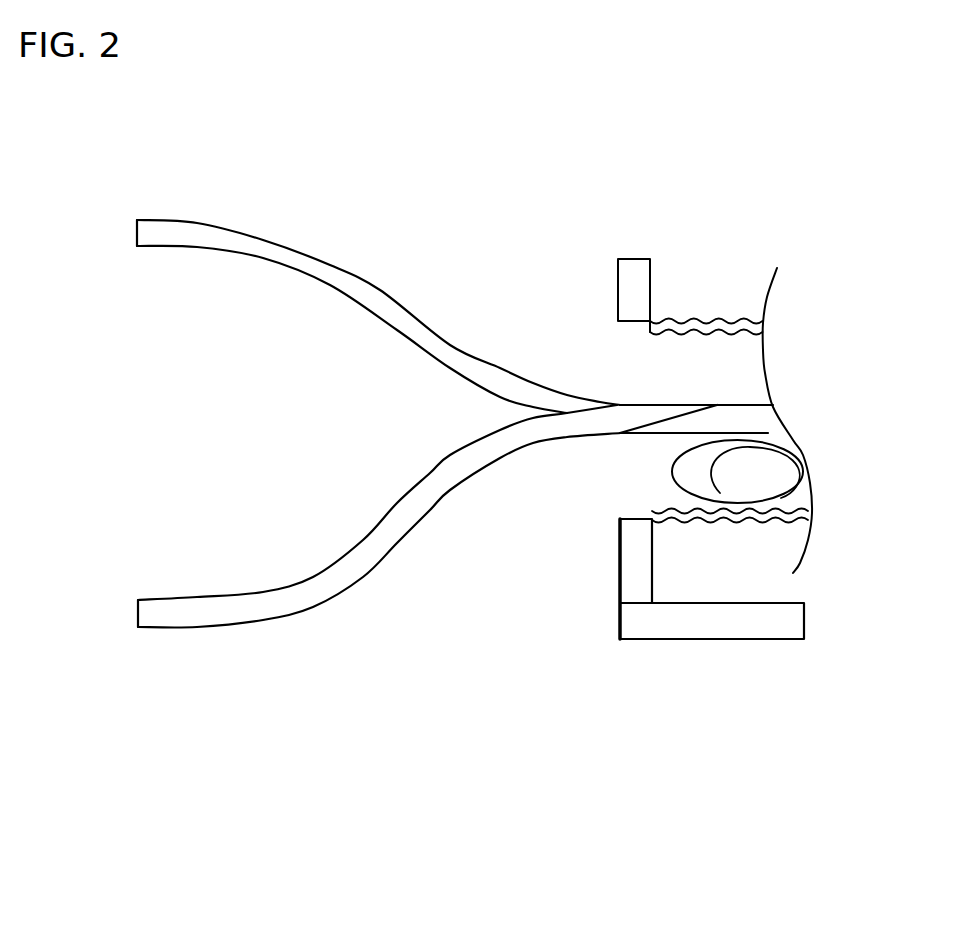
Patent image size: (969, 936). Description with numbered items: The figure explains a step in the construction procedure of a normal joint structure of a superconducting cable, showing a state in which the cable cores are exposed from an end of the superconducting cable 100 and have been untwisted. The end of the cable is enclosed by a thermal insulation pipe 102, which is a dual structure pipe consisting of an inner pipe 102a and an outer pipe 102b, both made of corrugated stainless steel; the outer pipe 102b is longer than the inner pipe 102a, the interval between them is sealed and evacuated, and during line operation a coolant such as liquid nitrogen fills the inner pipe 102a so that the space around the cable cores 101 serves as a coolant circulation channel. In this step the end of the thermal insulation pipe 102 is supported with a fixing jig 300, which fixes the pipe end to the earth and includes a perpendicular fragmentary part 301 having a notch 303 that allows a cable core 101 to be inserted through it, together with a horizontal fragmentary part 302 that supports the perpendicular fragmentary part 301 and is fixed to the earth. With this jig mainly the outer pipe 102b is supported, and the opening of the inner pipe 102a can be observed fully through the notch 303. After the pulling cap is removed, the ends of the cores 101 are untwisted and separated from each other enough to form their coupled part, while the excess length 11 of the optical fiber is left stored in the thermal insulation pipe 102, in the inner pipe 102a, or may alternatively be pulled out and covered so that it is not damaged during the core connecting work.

The superconducting cable 100 is at (474, 404).
The cable core 101 is at (210, 247).
The excess length of the optical fiber 11 is at (672, 467).
The thermal insulation pipe 102 is at (759, 621).
The inner pipe 102a is at (770, 520).
The outer pipe 102b is at (710, 520).
The fixing jig 300 is at (659, 634).
The perpendicular fragmentary part 301 is at (621, 572).
The horizontal fragmentary part 302 is at (677, 639).
The notch 303 is at (637, 517).